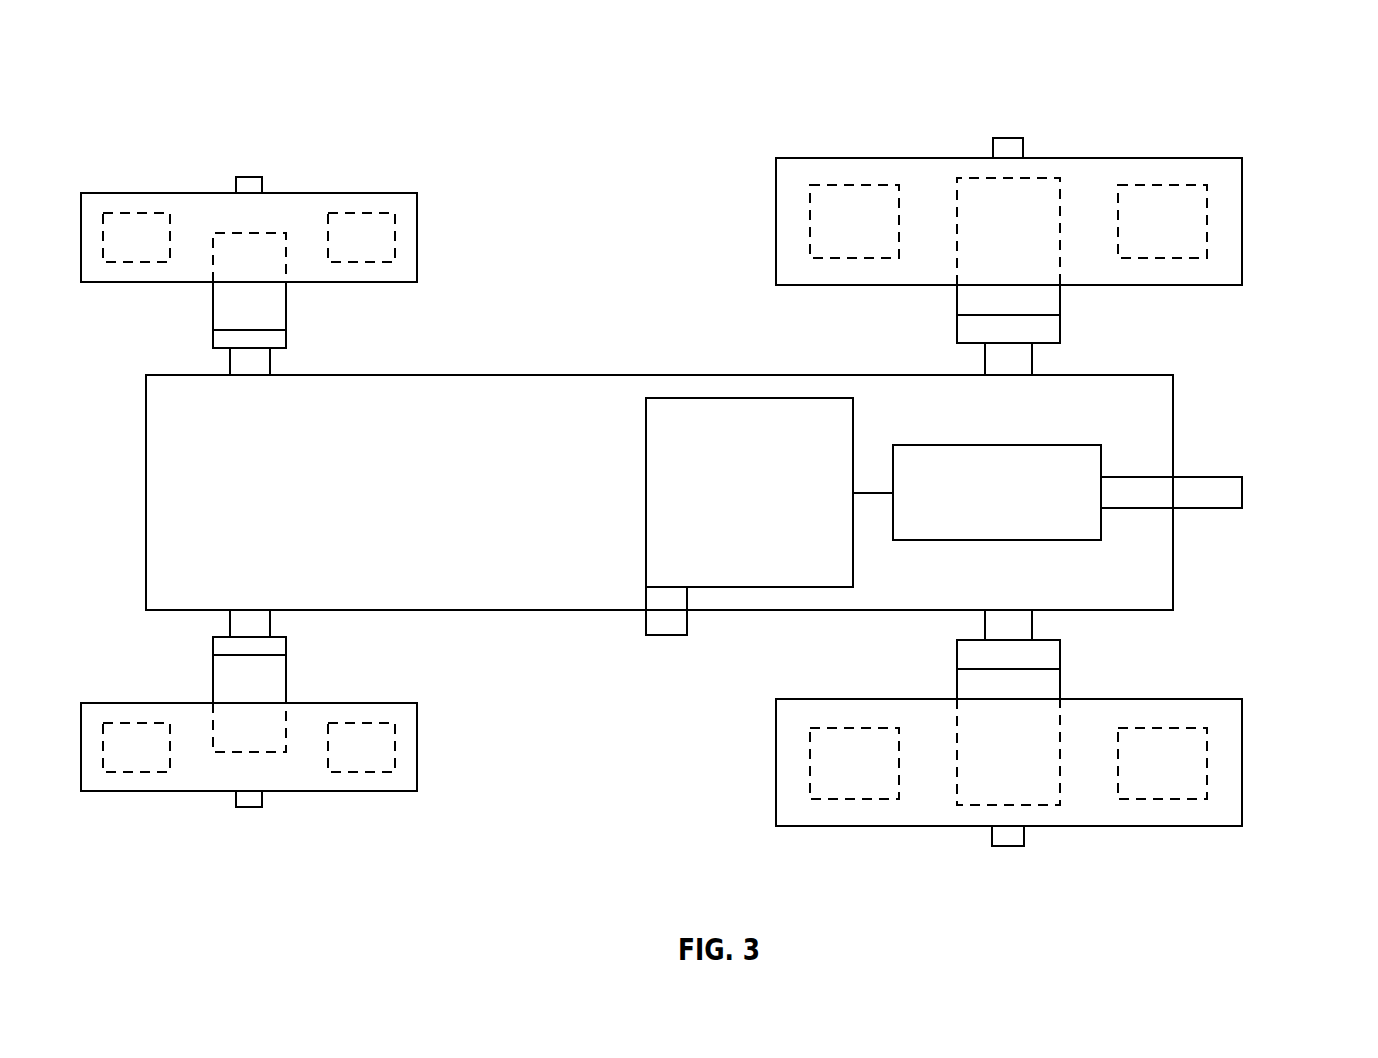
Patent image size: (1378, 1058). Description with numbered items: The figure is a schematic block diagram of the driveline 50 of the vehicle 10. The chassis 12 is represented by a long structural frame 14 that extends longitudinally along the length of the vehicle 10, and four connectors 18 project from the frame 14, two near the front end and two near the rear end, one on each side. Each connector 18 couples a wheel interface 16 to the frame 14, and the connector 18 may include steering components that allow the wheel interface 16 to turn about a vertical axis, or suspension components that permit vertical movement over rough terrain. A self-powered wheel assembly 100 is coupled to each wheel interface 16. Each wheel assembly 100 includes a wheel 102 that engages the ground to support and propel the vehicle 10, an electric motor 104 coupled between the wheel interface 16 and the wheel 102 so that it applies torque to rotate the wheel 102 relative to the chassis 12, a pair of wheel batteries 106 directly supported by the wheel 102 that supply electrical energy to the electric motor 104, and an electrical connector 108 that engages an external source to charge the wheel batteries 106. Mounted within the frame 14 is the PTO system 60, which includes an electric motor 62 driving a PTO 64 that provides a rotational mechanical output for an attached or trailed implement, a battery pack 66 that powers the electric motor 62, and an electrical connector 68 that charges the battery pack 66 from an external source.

The vehicle 10 is at (1135, 77).
The chassis 12 is at (1263, 432).
The frame 14 is at (1173, 542).
The wheel interface 16 is at (287, 340).
The connector 18 is at (230, 363).
The driveline 50 is at (1135, 905).
The PTO system 60 is at (1132, 420).
The electric motor 62 is at (998, 445).
The PTO 64 is at (1243, 492).
The battery pack 66 is at (672, 398).
The electrical connector 68 is at (667, 635).
The wheel assembly 100 is at (430, 158).
The wheel 102 is at (100, 193).
The electric motor 104 is at (213, 320).
The wheel battery 106 is at (140, 210).
The electrical connector 108 is at (250, 177).